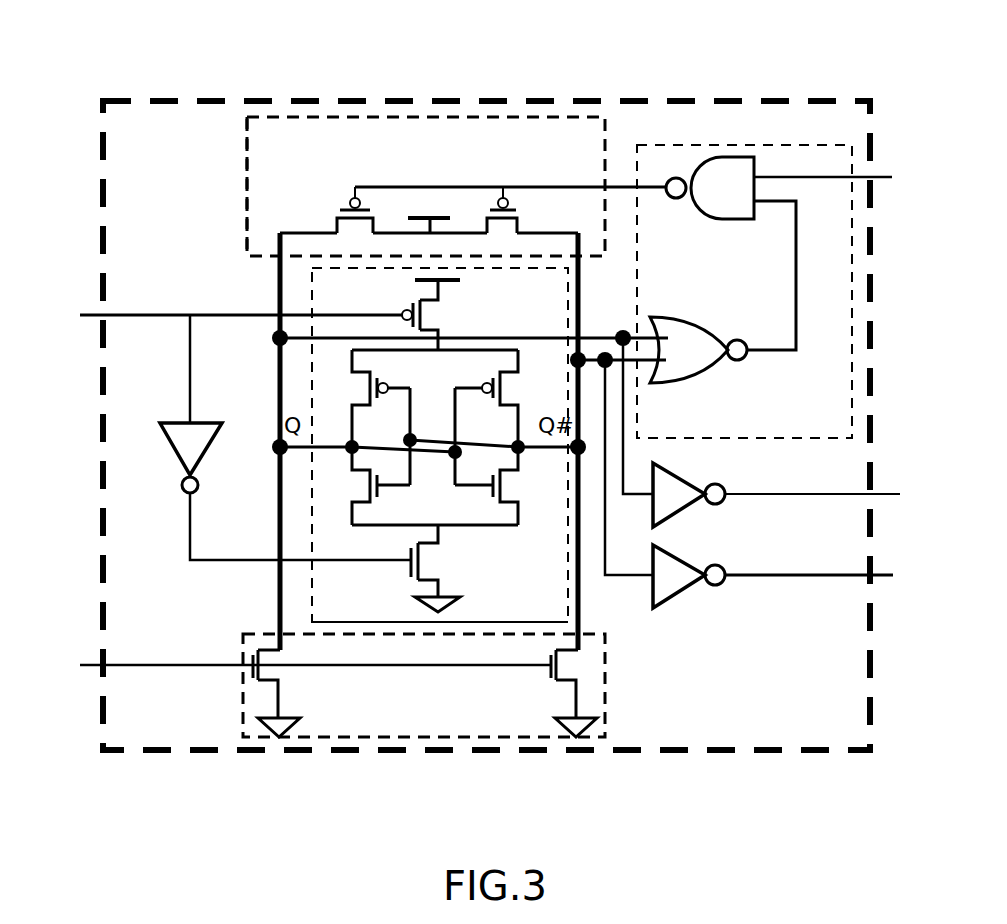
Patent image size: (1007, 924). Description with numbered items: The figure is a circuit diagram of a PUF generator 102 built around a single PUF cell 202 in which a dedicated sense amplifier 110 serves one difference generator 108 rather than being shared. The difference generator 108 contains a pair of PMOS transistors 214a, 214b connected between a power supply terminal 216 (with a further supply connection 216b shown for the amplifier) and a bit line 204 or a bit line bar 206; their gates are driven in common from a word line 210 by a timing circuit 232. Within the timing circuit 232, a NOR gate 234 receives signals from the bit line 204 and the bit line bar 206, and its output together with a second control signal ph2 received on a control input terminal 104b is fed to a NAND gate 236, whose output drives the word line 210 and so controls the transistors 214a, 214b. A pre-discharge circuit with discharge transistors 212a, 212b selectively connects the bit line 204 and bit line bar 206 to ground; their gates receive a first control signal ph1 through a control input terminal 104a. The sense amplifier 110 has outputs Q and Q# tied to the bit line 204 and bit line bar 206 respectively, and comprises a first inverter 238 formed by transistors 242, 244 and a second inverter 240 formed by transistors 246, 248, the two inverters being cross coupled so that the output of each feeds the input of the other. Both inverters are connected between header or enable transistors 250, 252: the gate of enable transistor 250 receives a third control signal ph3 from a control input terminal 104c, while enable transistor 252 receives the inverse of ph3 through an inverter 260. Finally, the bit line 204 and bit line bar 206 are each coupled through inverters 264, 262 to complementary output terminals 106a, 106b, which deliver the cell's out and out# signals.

The sense amplifier circuit 102 is at (138, 36).
The PUF cell 202 is at (815, 97).
The difference generator 108 is at (247, 143).
The word line 210 is at (565, 187).
The transistor 214a is at (337, 218).
The transistor 214b is at (518, 220).
The power supply terminal 216 is at (412, 212).
The supply connection 216b is at (460, 281).
The bit line 204 is at (278, 392).
The bit line bar 206 is at (582, 577).
The control input terminal 104c is at (127, 316).
The control input terminal 104a is at (127, 666).
The control input terminal 104b is at (877, 178).
The inverter 260 is at (180, 472).
The sense amplifier 110 is at (312, 306).
The second inverter 240 is at (508, 538).
The enable transistor 250 is at (412, 303).
The transistor 242 is at (380, 380).
The transistor 244 is at (379, 498).
The transistor 246 is at (488, 384).
The transistor 248 is at (491, 493).
The enable transistor 252 is at (410, 550).
The first inverter 238 is at (341, 540).
The discharge transistor 212a is at (258, 653).
The discharge transistor 212b is at (554, 656).
The timing circuit 232 is at (787, 145).
The NAND gate 236 is at (733, 220).
The NOR gate 234 is at (698, 320).
The inverter 262 is at (683, 505).
The inverter 264 is at (683, 590).
The output terminal 106a is at (803, 493).
The output terminal 106b is at (857, 573).